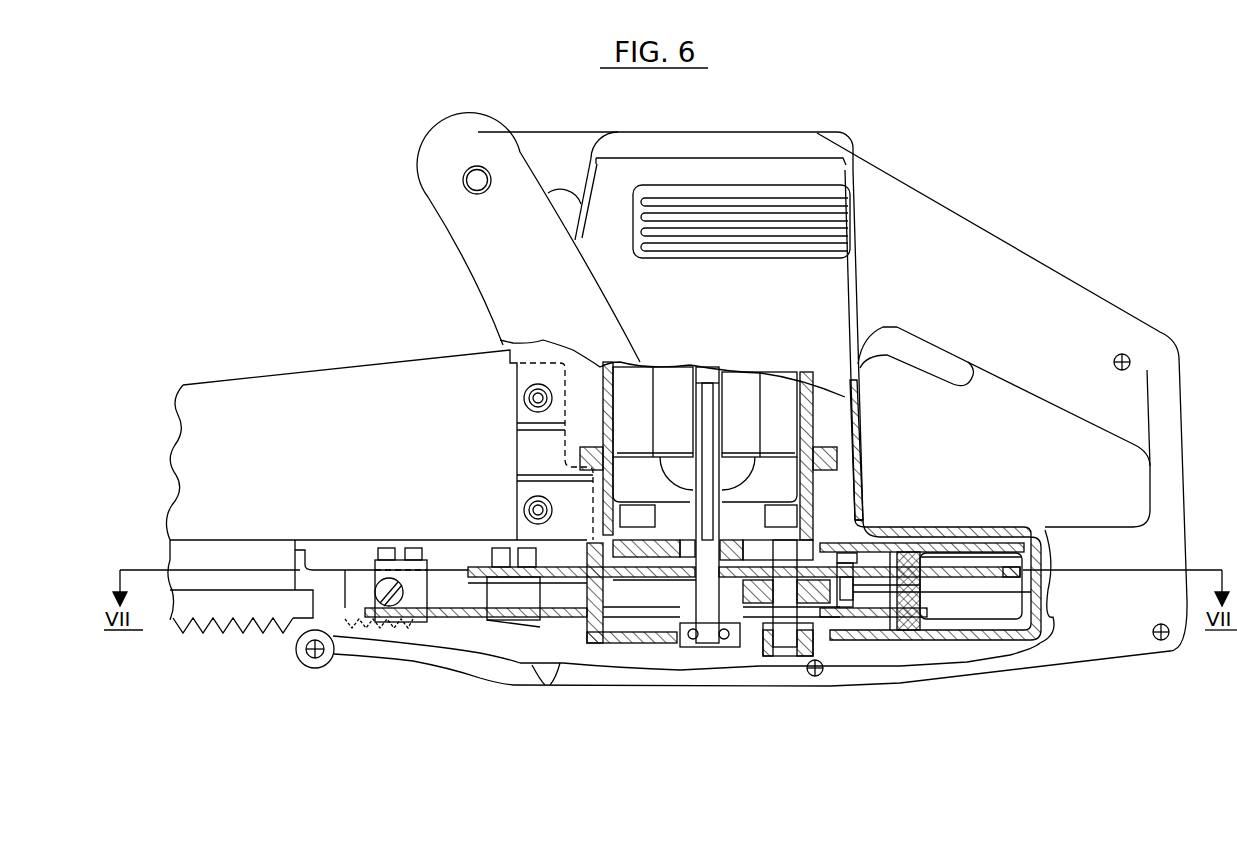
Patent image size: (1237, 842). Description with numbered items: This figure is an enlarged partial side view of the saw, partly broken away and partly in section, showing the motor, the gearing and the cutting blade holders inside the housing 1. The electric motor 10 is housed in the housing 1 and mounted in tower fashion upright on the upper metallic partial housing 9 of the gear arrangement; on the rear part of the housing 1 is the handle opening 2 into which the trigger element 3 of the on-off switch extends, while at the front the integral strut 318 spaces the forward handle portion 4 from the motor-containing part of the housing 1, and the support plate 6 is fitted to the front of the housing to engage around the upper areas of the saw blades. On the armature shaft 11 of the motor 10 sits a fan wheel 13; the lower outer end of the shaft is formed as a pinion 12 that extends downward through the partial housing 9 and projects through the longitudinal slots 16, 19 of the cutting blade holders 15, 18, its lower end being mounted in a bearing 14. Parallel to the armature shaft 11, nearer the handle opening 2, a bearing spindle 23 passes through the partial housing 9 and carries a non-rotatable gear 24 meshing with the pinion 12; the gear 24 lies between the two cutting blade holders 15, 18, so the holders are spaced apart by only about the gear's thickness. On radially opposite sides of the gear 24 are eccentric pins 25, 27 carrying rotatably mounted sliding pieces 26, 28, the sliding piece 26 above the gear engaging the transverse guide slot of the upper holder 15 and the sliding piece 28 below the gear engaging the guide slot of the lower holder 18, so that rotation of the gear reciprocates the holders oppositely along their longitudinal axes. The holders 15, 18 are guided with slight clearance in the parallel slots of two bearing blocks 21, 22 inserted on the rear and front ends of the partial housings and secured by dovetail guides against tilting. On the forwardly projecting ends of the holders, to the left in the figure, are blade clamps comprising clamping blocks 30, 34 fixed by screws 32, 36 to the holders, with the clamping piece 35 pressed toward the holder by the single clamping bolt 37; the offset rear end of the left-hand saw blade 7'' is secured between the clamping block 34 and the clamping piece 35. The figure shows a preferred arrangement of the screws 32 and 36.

The housing 1 is at (857, 270).
The handle opening 2 is at (1000, 402).
The trigger element 3 is at (923, 350).
The lever 4 is at (466, 150).
The strut 318 is at (553, 153).
The electric motor 10 is at (857, 317).
The armature shaft 11 is at (708, 420).
The support plate 6 is at (228, 410).
The left-hand saw blade 7'' is at (291, 659).
The upper partial housing 9 is at (1023, 537).
The pinion 12 is at (690, 597).
The fan wheel 13 is at (633, 590).
The bearing 14 is at (713, 627).
The upper cutting blade holder 15 is at (977, 578).
The longitudinal slot 16 is at (878, 567).
The lower cutting blade holder 18 is at (453, 620).
The longitudinal slot 19 is at (653, 617).
The bearing block 21 is at (940, 583).
The bearing block 22 is at (602, 593).
The bearing spindle 23 is at (752, 612).
The gear 24 is at (763, 627).
The eccentric pin 25 is at (840, 598).
The sliding piece 26 is at (867, 570).
The eccentric pin 27 is at (725, 612).
The sliding piece 28 is at (743, 647).
The clamping block 30 is at (497, 593).
The screws 32 is at (413, 545).
The clamping block 34 is at (420, 590).
The clamping piece 35 is at (413, 603).
The screws 36 is at (498, 545).
The clamping bolt 37 is at (383, 613).